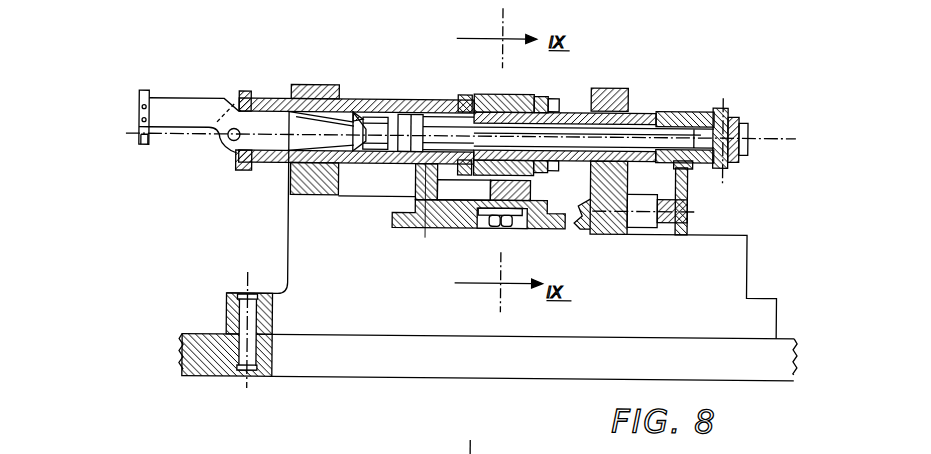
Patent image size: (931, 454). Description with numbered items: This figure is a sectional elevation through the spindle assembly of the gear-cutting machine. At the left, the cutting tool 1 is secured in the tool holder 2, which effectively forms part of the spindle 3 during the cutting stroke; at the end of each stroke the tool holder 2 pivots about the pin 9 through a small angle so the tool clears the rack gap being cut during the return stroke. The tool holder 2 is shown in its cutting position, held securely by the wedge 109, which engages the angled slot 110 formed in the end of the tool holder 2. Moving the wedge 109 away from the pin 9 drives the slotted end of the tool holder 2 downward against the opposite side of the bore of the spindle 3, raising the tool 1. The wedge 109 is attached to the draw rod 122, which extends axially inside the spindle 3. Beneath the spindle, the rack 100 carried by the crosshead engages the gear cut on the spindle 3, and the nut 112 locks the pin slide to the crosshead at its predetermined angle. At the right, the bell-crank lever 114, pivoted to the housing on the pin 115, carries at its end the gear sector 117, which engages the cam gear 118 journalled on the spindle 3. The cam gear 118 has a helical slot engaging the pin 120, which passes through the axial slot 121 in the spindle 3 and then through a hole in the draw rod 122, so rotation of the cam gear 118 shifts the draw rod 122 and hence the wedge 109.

The cutting tool 1 is at (148, 95).
The tool holder 2 is at (170, 107).
The spindle 3 is at (252, 103).
The pin 9 is at (230, 141).
The rack 100 is at (423, 165).
The wedge 109 is at (385, 128).
The angled slot 110 is at (353, 122).
The nut 112 is at (490, 228).
The bell-crank lever 114 is at (688, 186).
The pin 115 is at (666, 223).
The gear sector 117 is at (691, 166).
The cam gear 118 is at (677, 110).
The pin 120 is at (728, 110).
The axial slot 121 is at (723, 106).
The draw rod 122 is at (563, 132).